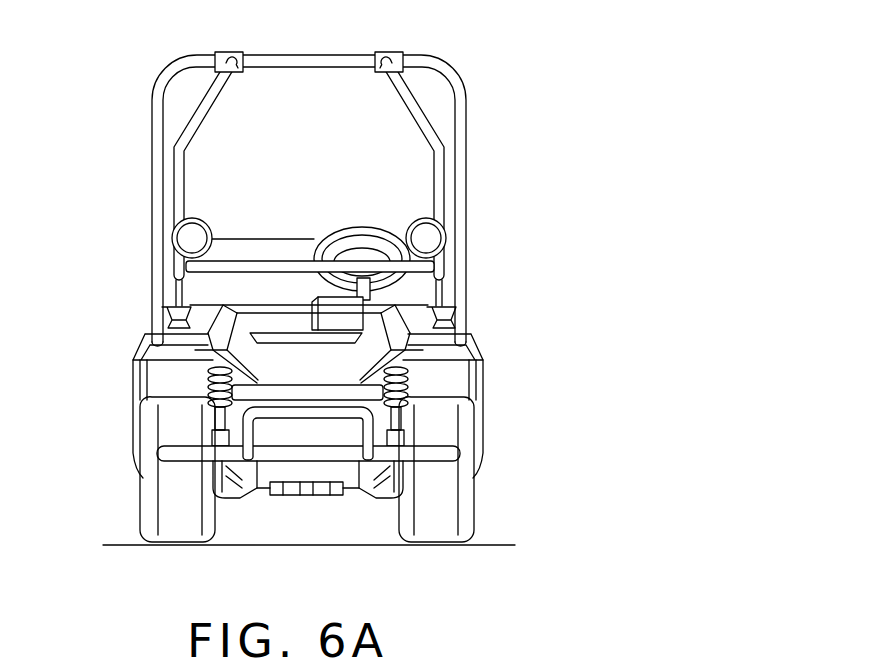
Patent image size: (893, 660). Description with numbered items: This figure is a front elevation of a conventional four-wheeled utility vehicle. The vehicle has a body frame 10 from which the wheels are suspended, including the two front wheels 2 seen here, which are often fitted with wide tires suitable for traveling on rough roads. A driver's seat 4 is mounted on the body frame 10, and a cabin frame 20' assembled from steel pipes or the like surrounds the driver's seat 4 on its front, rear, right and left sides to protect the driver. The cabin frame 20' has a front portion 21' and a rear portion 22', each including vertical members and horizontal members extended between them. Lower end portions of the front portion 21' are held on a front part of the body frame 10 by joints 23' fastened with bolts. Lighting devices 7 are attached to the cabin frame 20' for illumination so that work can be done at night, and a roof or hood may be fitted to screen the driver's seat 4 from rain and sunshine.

The cabin frame 20′ is at (368, 178).
The front portion of the cabin frame 21′ is at (420, 124).
The rear portion of the cabin frame 22′ is at (462, 178).
The joints 23′ is at (160, 328).
The lighting devices 7 is at (200, 218).
The driver's seat 4 is at (268, 243).
The body frame 10 is at (315, 390).
The front wheels 2 is at (147, 501).